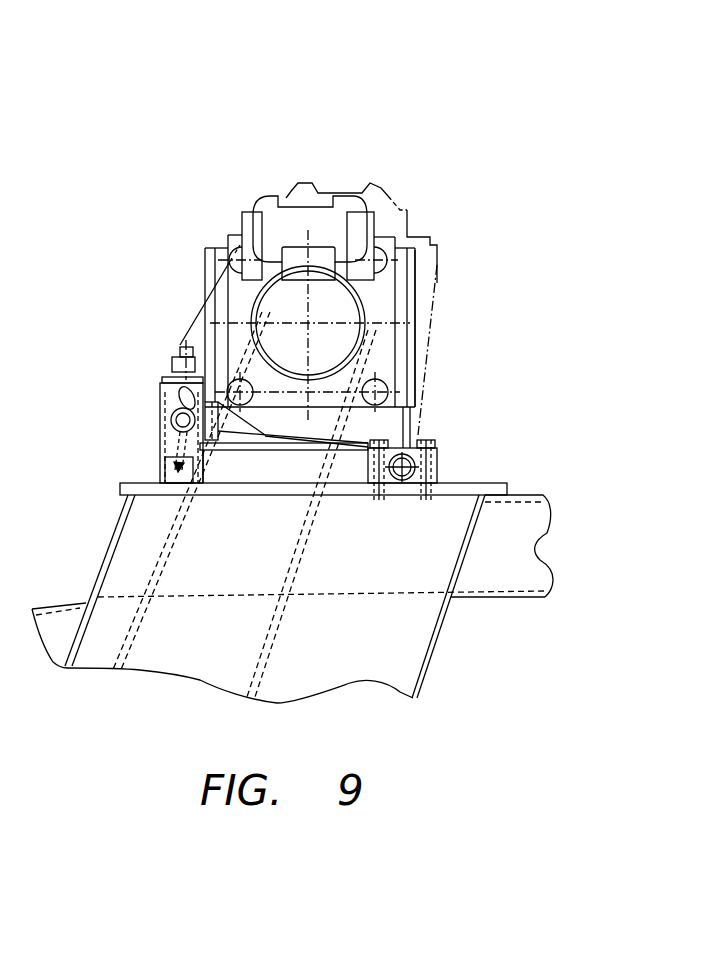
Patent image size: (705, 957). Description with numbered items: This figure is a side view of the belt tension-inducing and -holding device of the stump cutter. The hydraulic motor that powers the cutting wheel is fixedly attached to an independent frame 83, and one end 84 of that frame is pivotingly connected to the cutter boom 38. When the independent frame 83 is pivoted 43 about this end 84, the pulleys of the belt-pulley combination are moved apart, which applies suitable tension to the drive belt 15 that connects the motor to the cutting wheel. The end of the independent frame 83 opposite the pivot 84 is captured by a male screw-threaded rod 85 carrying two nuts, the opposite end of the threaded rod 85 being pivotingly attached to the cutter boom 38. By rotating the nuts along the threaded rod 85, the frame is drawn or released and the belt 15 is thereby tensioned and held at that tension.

The drive belt 15 is at (320, 465).
The cutter boom 38 is at (467, 483).
The pivoting motion 43 is at (393, 192).
The independent frame 83 is at (414, 283).
The pivot end 84 is at (430, 460).
The male screw-threaded rod 85 is at (178, 345).